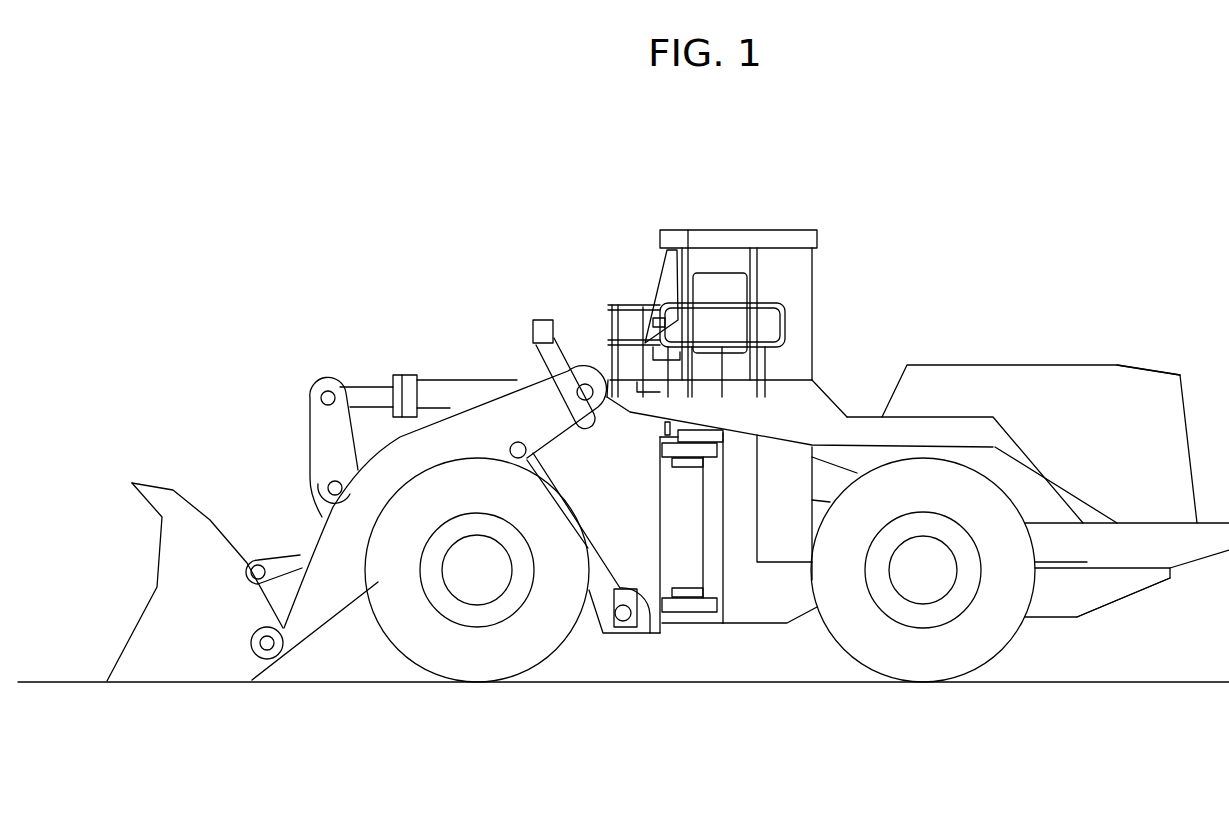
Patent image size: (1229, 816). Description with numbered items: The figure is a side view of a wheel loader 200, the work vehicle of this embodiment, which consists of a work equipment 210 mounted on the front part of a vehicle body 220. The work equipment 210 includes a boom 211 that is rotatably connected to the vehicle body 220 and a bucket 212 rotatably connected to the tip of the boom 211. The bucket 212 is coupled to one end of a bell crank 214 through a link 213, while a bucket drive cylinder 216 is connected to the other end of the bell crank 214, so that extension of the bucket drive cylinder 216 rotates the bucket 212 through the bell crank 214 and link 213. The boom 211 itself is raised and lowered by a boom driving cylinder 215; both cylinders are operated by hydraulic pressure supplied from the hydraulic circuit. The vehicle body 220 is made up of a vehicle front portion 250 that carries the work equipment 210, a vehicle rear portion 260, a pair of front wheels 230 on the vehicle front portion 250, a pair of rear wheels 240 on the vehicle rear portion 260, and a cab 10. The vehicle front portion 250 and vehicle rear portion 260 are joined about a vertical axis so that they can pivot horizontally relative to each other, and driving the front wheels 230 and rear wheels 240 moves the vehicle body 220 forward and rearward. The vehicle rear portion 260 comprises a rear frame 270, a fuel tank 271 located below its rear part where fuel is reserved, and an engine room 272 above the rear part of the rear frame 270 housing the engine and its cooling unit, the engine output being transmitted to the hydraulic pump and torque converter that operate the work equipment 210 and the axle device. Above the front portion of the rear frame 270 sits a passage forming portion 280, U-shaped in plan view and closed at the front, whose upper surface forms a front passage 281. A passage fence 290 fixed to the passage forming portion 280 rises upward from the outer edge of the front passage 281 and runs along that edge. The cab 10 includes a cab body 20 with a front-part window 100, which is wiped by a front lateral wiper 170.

The cab 10 is at (623, 457).
The cab body 20 is at (720, 257).
The front-part window 100 is at (658, 287).
The front lateral wiper 170 is at (667, 252).
The wheel loader 200 is at (391, 472).
The work equipment 210 is at (297, 476).
The boom 211 is at (394, 451).
The bucket 212 is at (153, 490).
The link 213 is at (276, 557).
The bell crank 214 is at (323, 428).
The boom driving cylinder 215 is at (650, 634).
The bucket drive cylinder 216 is at (424, 380).
The vehicle body 220 is at (888, 453).
The front wheels 230 is at (473, 683).
The rear wheels 240 is at (918, 673).
The vehicle front portion 250 is at (495, 288).
The vehicle rear portion 260 is at (1038, 393).
The rear frame 270 is at (1127, 644).
The fuel tank 271 is at (1110, 590).
The engine room 272 is at (1162, 376).
The passage forming portion 280 is at (697, 412).
The front passage 281 is at (637, 380).
The passage fence 290 is at (612, 303).